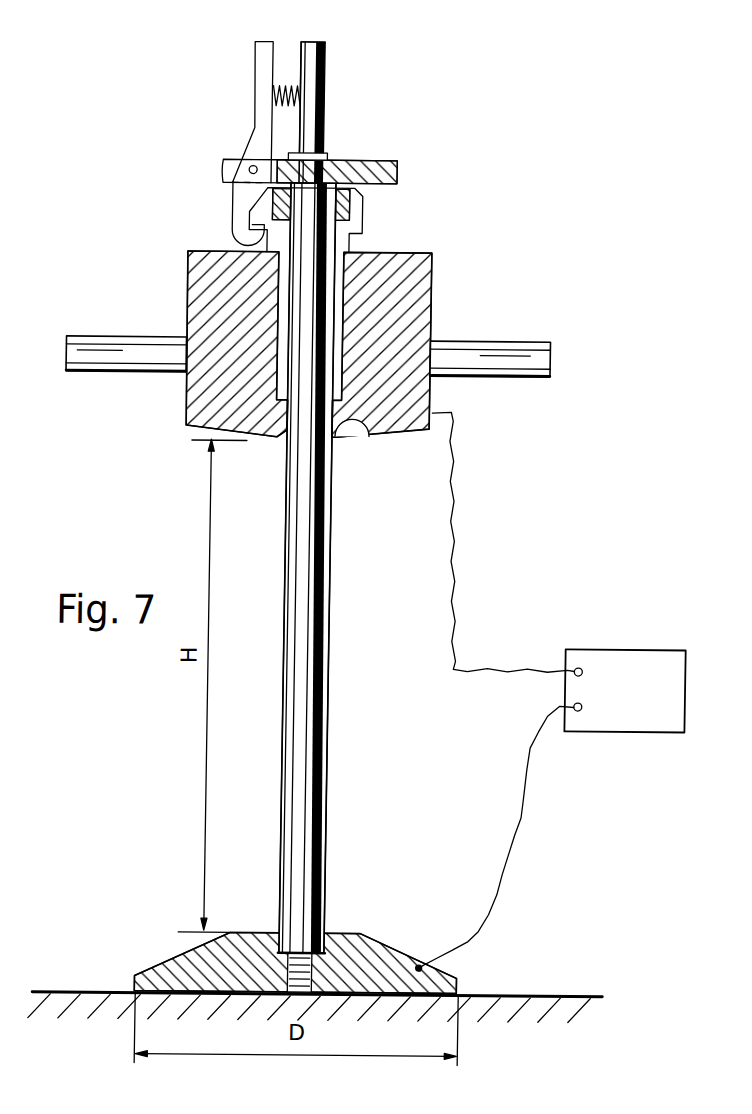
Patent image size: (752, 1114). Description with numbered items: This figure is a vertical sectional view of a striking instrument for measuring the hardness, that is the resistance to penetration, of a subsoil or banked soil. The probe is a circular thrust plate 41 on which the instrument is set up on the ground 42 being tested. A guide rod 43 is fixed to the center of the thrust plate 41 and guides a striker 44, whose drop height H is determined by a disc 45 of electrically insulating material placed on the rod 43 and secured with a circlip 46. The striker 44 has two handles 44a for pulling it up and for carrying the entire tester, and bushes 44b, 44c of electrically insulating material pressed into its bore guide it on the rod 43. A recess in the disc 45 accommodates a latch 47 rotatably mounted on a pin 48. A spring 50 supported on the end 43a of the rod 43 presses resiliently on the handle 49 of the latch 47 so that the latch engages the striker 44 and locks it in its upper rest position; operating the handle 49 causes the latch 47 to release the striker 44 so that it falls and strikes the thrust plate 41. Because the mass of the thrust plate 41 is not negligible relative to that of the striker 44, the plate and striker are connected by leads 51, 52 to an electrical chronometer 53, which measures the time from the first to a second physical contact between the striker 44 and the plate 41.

The thrust plate 41 is at (372, 939).
The ground 42 is at (576, 991).
The guide rod 43 is at (308, 650).
The end of the rod 43a is at (306, 66).
The striker 44 is at (432, 288).
The handles 44a is at (117, 352).
The bush 44b is at (362, 436).
The bush 44c is at (355, 205).
The disc 45 is at (373, 163).
The circlip 46 is at (322, 154).
The latch 47 is at (233, 218).
The pin 48 is at (247, 166).
The handle of the latch 49 is at (255, 62).
The spring 50 is at (274, 86).
The lead 51 is at (528, 818).
The lead 52 is at (453, 530).
The electrical chronometer 53 is at (625, 662).